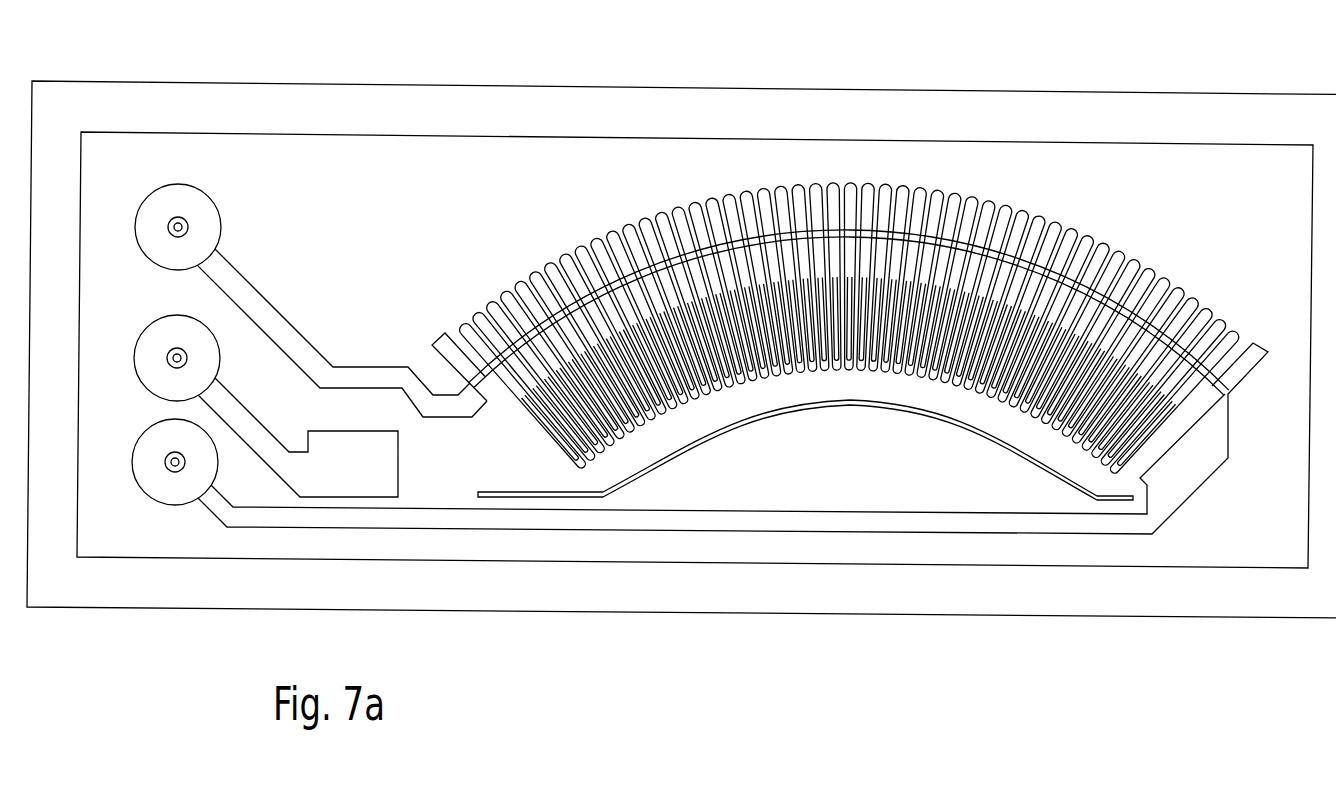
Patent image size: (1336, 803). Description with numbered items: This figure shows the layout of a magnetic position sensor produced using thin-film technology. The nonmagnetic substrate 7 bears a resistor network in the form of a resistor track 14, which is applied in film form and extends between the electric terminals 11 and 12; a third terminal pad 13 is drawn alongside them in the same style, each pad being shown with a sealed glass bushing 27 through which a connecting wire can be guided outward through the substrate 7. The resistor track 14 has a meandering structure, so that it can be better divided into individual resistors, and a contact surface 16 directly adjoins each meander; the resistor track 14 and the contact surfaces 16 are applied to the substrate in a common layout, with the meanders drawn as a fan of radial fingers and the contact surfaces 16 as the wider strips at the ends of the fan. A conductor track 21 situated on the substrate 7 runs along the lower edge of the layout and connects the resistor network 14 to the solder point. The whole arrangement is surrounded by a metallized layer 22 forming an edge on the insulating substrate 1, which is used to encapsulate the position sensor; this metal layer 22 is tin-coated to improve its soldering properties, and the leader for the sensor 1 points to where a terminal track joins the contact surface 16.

The insulating substrate 1 is at (489, 401).
The nonmagnetic substrate 7 is at (1145, 165).
The electric terminal 11 is at (150, 460).
The electric terminal 12 is at (207, 218).
The contact pad 13 is at (153, 375).
The resistor track 14 is at (681, 393).
The contact surface 16 is at (453, 335).
The conductor track 21 is at (881, 518).
The metallized layer 22 is at (1022, 590).
The glass bushing 27 is at (176, 229).